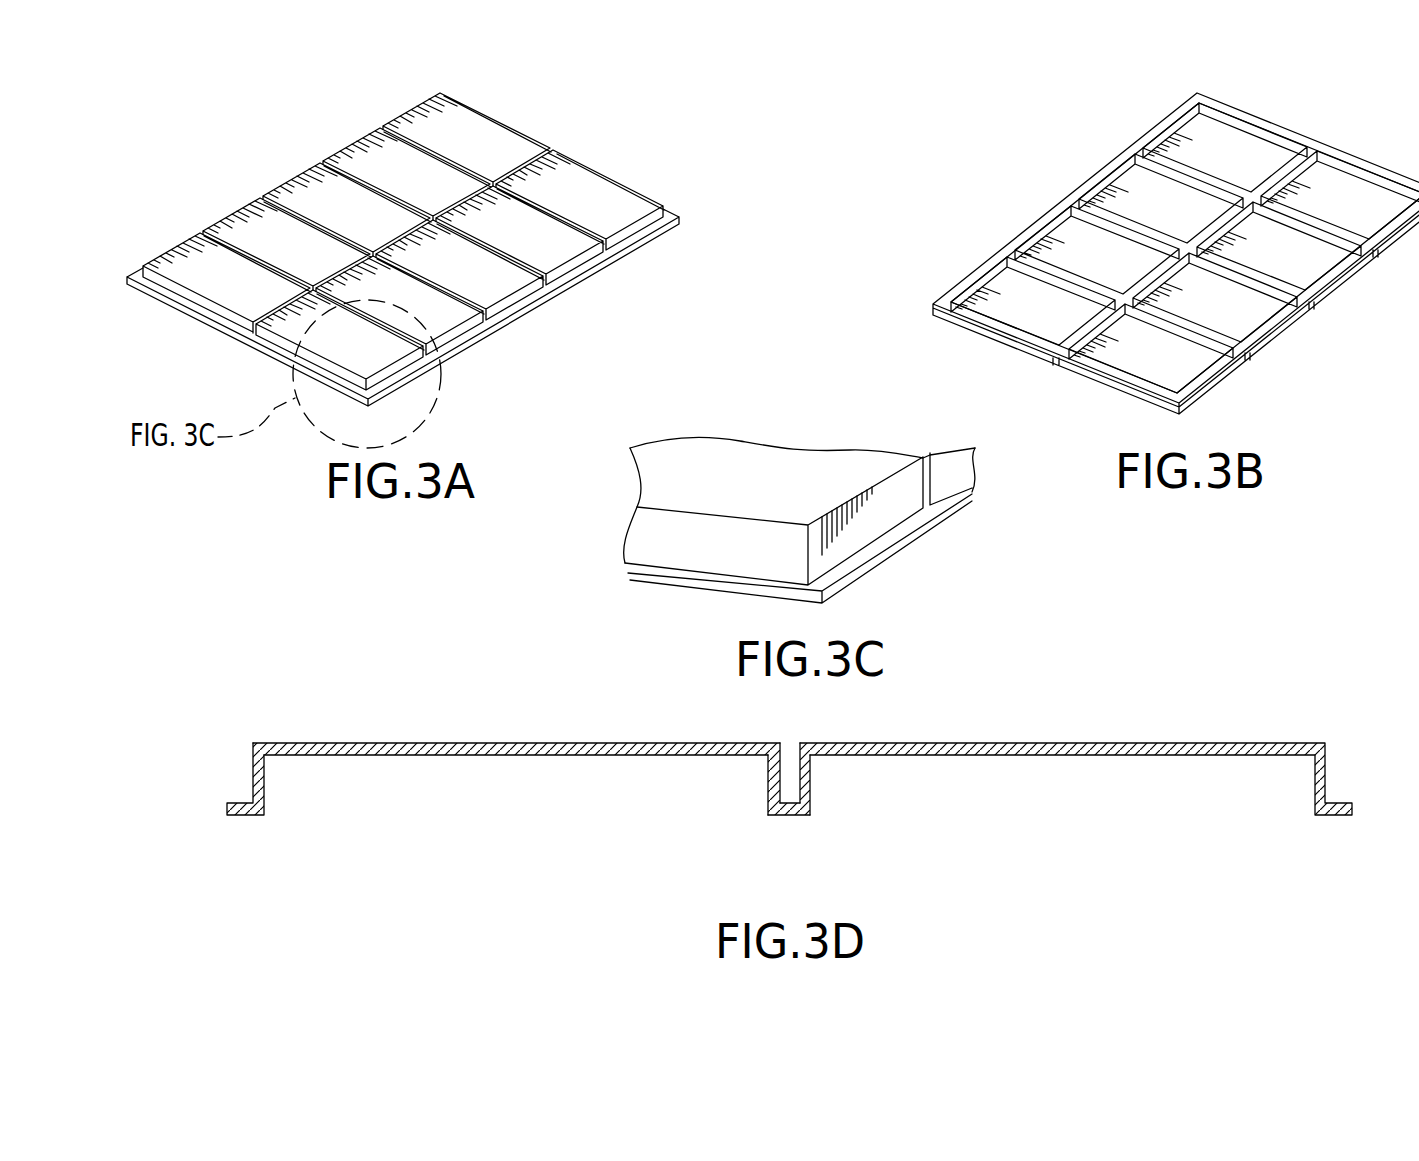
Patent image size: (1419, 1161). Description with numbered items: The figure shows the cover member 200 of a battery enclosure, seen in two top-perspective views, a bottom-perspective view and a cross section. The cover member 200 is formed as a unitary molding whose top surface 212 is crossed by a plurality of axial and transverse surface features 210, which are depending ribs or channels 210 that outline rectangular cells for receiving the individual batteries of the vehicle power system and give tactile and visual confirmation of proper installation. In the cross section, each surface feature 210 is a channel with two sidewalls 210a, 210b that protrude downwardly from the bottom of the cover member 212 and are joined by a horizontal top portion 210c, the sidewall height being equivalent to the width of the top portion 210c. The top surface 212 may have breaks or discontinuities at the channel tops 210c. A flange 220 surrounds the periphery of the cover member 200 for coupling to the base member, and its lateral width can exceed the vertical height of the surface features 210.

In FIG. 3A, the cover member 200 is at (585, 140).
In FIG. 3B, the cover member 200 is at (1297, 350).
In FIG. 3A, the surface features 210 is at (240, 342).
In FIG. 3B, the surface features 210 is at (1212, 216).
In FIG. 3A, the top surface 212 is at (387, 227).
In FIG. 3C, the top surface 212 is at (796, 498).
In FIG. 3D, the top surface 212 is at (607, 759).
In FIG. 3D, the flange 220 is at (240, 800).
In FIG. 3D, the sidewall 210a is at (765, 780).
In FIG. 3D, the sidewall 210b is at (813, 780).
In FIG. 3D, the horizontal top portion 210c is at (790, 818).